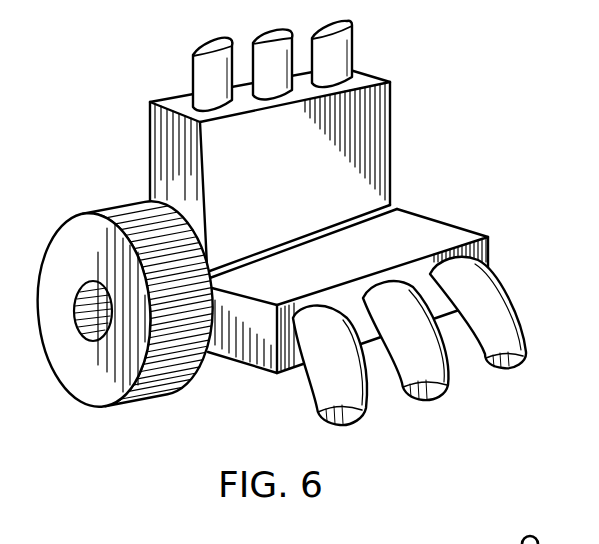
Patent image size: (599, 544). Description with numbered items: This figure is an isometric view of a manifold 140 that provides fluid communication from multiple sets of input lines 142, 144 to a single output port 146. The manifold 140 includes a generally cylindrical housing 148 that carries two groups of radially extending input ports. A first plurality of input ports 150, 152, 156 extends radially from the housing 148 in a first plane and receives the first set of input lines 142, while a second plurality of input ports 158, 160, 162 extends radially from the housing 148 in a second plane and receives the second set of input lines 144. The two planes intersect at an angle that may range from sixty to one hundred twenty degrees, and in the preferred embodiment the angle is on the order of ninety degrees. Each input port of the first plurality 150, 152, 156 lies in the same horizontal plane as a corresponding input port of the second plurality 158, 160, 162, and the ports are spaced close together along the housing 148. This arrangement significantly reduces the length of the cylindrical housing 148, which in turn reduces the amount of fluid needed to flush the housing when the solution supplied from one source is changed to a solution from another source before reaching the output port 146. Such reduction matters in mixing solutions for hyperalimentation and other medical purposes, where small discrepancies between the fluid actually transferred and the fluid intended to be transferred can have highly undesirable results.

The manifold 140 is at (391, 158).
The input lines 142 is at (308, 86).
The input lines 144 is at (425, 324).
The output port 146 is at (77, 356).
The cylindrical housing 148 is at (127, 207).
The input port 150 is at (213, 113).
The input port 152 is at (272, 103).
The input port 156 is at (356, 80).
The input port 158 is at (303, 303).
The input port 160 is at (376, 282).
The input port 162 is at (431, 272).